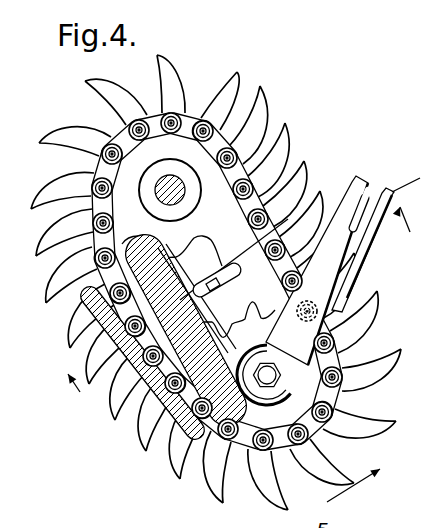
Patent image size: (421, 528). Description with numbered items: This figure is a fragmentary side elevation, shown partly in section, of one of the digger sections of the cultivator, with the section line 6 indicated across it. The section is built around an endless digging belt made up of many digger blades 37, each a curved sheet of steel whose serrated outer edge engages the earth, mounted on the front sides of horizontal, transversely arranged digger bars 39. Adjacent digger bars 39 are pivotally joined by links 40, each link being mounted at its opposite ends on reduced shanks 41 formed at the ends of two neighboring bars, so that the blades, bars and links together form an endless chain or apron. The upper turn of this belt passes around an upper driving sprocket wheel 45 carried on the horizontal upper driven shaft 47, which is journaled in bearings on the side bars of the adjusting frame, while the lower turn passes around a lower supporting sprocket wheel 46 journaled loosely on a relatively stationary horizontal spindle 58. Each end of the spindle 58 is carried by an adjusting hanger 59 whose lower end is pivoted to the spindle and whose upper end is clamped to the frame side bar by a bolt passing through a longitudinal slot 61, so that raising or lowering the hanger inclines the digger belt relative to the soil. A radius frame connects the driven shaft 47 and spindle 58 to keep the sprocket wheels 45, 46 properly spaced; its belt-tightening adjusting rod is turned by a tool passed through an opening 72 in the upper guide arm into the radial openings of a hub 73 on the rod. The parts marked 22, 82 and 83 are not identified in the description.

The direction of rotation arrow 6 is at (85, 355).
The tine rotor assembly 22 is at (204, 282).
The digger blade 37 is at (96, 84).
The digger bar 39 is at (284, 150).
The link 40 is at (247, 441).
The reduced shank 41 is at (345, 341).
The upper driving sprocket wheel 45 is at (169, 141).
The lower supporting sprocket wheel 46 is at (262, 348).
The upper driven shaft 47 is at (184, 193).
The supporting spindle 58 is at (269, 372).
The adjusting hanger 59 is at (317, 270).
The longitudinal slot 61 is at (358, 224).
The opening 72 is at (208, 280).
The hub 73 is at (216, 290).
The support bar 82 is at (110, 380).
The support bar 83 is at (120, 305).